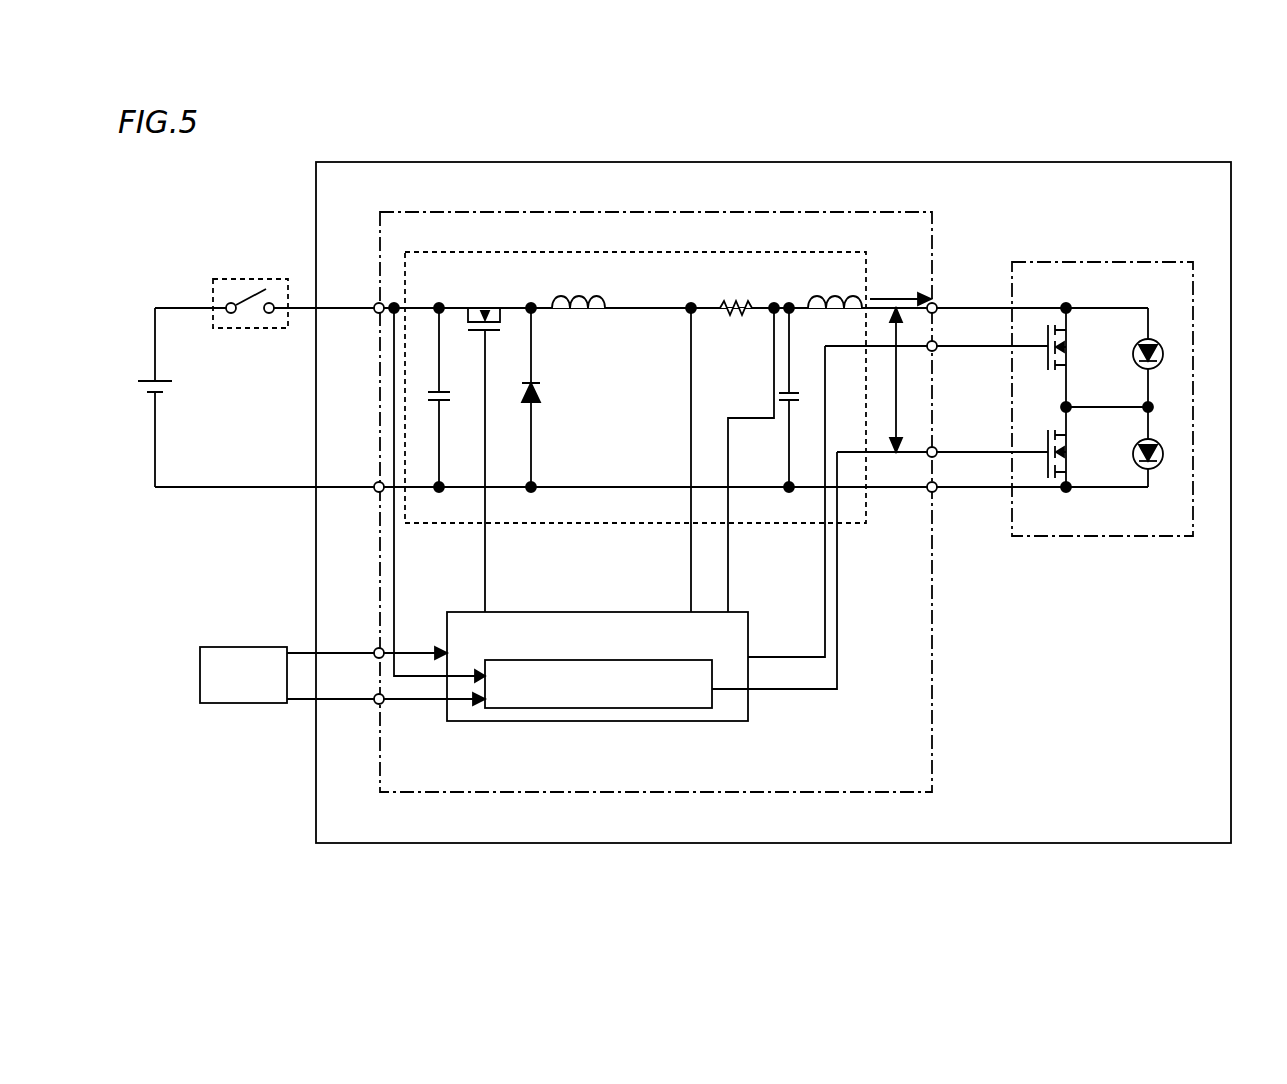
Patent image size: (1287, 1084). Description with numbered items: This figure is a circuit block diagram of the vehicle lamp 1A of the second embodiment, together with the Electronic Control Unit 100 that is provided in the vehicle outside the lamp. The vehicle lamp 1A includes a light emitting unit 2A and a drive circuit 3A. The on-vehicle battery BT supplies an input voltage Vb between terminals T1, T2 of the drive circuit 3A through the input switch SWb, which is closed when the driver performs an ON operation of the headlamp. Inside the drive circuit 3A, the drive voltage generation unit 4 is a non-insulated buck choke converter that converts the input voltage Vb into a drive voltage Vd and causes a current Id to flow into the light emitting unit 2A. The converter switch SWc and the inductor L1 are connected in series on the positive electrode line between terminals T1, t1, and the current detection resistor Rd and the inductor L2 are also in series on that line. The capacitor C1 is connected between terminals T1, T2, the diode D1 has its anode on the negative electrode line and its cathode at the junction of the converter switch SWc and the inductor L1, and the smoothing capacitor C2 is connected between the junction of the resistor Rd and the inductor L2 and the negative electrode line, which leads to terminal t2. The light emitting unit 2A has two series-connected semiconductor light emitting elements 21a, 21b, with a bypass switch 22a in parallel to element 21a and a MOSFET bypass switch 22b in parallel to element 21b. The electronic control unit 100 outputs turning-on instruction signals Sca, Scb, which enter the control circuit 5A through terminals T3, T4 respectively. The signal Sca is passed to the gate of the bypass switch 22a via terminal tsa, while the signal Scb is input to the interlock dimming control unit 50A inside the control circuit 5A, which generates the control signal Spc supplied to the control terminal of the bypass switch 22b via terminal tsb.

The vehicle lamp 1A is at (1124, 845).
The light emitting unit 2A is at (1124, 262).
The drive circuit 3A is at (852, 212).
The drive voltage generation unit 4 is at (867, 270).
The control circuit 5A is at (748, 722).
The interlock dimming control unit 50A is at (593, 708).
The Electronic Control Unit (ECU) 100 is at (247, 645).
The semiconductor light emitting element 21a is at (1163, 352).
The semiconductor light emitting element 21b is at (1165, 455).
The bypass switch 22a is at (1077, 344).
The bypass switch 22b is at (1077, 464).
The on-vehicle battery BT is at (147, 397).
The input switch SWb is at (272, 278).
The converter switch SWc is at (486, 448).
The capacitor C1 is at (448, 397).
The capacitor C2 is at (798, 397).
The diode D1 is at (543, 397).
The inductor L1 is at (578, 320).
The inductor L2 is at (835, 319).
The current detection resistor Rd is at (736, 321).
The input voltage Vb is at (380, 307).
The drive voltage Vd is at (896, 380).
The current Id is at (900, 291).
The terminal T1 is at (378, 304).
The terminal T2 is at (375, 492).
The terminal T3 is at (378, 650).
The terminal T4 is at (378, 702).
The terminal t1 is at (934, 305).
The terminal t2 is at (934, 490).
The terminal tsa is at (934, 349).
The terminal tsb is at (934, 450).
The turning-on instruction signal Sca is at (302, 648).
The turning-on instruction signal Scb is at (302, 705).
The control signal Spc is at (774, 571).